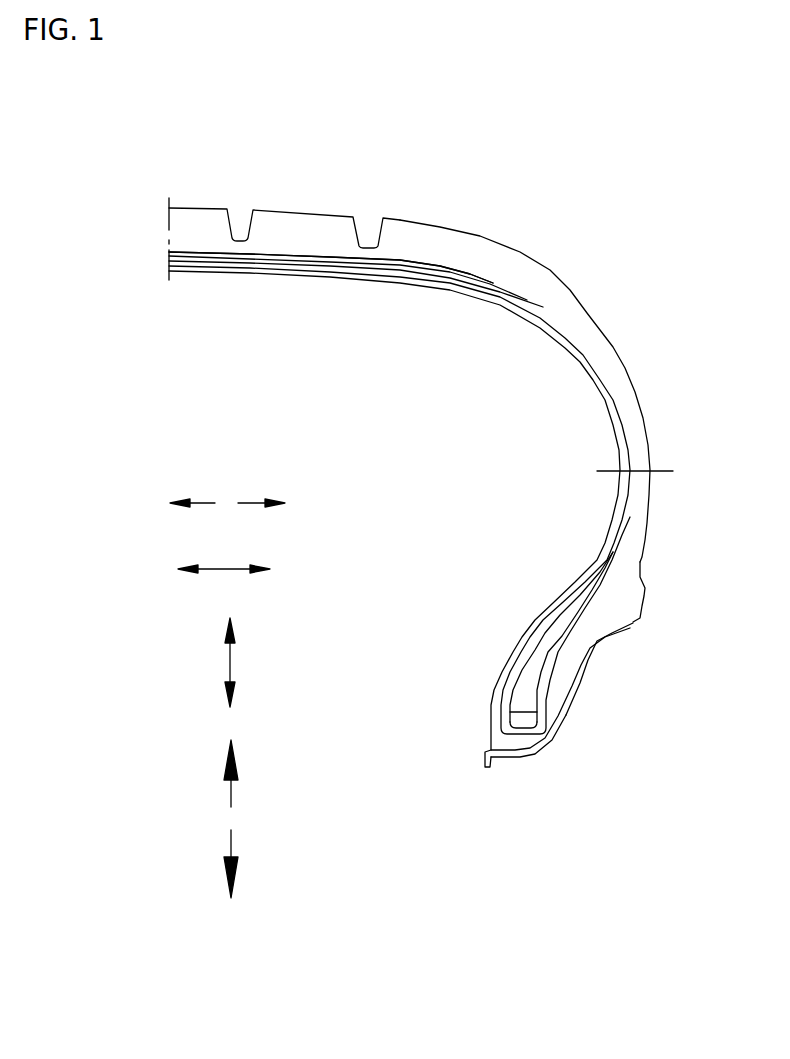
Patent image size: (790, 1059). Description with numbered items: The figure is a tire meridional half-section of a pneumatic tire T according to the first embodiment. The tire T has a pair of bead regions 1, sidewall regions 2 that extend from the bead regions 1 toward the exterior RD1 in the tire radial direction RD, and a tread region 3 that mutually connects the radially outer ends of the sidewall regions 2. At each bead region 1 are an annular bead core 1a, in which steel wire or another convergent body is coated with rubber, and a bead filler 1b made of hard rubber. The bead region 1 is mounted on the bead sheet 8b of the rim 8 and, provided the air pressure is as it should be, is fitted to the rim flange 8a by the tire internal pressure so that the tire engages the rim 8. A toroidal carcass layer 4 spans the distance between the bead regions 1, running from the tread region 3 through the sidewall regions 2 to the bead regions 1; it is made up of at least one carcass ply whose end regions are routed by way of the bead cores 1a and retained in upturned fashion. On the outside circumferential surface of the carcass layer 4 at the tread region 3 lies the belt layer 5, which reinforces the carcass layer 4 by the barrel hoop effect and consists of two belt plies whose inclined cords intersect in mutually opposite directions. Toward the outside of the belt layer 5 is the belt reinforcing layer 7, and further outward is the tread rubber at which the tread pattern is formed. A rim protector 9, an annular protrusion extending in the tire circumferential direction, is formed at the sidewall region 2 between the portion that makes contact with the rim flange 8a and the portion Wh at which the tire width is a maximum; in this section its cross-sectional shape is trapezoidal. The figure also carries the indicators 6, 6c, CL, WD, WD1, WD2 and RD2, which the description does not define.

The bead region 1 is at (408, 700).
The bead core 1a is at (517, 727).
The bead filler 1b is at (528, 676).
The sidewall region 2 is at (650, 442).
The tread region 3 is at (278, 167).
The carcass layer 4 is at (617, 407).
The belt layer 5 is at (277, 265).
The belt reinforcing layer 6 is at (228, 252).
The belt edge reinforcing layer 6c is at (331, 267).
The belt reinforcing layer 7 is at (423, 260).
The rim 8 is at (585, 735).
The rim flange 8a is at (593, 652).
The bead sheet 8b is at (512, 757).
The rim protector 9 is at (645, 598).
The pneumatic tire T is at (562, 182).
The tire equator line CL is at (169, 257).
The maximum tire width portion Wh is at (617, 472).
The tire width direction WD is at (224, 555).
The tire width direction outer side WD1 is at (264, 489).
The tire width direction inner side WD2 is at (190, 489).
The tire radial direction RD is at (250, 662).
The tire radial direction exterior RD1 is at (257, 773).
The tire radial direction inner side RD2 is at (258, 864).